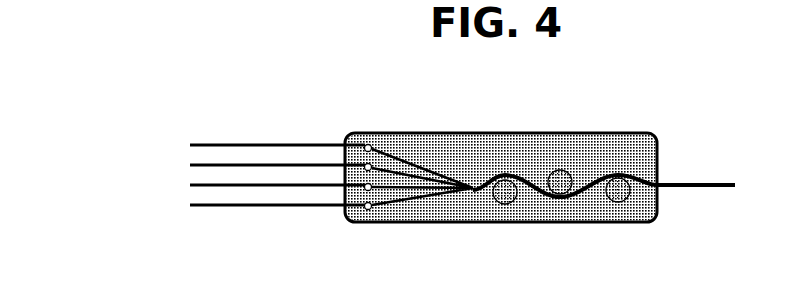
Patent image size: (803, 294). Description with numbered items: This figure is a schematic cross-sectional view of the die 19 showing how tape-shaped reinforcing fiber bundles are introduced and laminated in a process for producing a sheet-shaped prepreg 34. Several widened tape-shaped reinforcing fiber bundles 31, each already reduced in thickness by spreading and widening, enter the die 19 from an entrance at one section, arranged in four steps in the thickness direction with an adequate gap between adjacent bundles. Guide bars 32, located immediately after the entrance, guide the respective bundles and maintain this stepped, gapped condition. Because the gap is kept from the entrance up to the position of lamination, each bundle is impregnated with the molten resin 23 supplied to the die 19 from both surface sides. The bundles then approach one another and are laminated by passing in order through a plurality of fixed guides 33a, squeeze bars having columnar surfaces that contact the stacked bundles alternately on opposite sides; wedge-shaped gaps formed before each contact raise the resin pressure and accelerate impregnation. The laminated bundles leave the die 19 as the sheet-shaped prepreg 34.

The die 19 is at (500, 133).
The molten resin 23 is at (567, 143).
The widened tape-shaped reinforcing fiber bundle 31 is at (263, 165).
The guide bar 32 is at (370, 145).
The fixed guide 33a is at (505, 197).
The sheet-shaped prepreg 34 is at (693, 183).